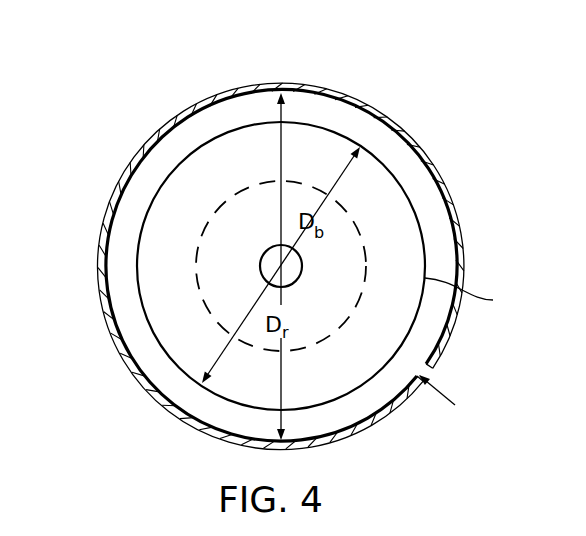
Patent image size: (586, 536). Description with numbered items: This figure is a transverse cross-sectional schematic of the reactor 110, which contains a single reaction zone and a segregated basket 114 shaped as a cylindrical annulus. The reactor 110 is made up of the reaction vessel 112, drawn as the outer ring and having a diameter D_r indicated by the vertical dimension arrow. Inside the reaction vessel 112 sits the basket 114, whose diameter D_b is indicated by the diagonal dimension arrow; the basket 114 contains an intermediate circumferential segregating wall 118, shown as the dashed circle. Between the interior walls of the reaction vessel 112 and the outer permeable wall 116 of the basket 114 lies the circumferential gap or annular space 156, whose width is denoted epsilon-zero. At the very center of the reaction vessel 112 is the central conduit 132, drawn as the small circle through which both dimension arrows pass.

The reactor 110 is at (281, 232).
The reaction vessel 112 is at (257, 82).
The basket 114 is at (424, 218).
The outer permeable wall 116 is at (486, 295).
The intermediate circumferential segregating wall 118 is at (234, 189).
The central conduit 132 is at (261, 267).
The circumferential gap or annular space 156 is at (433, 396).